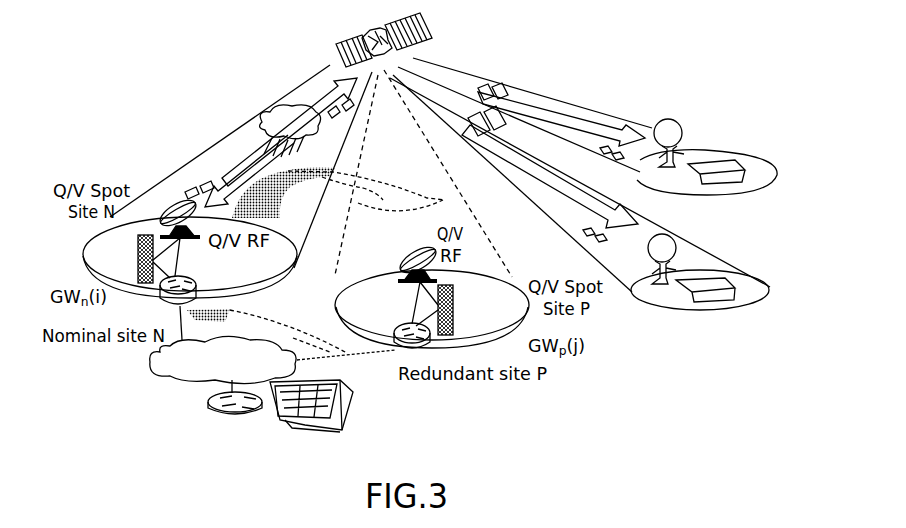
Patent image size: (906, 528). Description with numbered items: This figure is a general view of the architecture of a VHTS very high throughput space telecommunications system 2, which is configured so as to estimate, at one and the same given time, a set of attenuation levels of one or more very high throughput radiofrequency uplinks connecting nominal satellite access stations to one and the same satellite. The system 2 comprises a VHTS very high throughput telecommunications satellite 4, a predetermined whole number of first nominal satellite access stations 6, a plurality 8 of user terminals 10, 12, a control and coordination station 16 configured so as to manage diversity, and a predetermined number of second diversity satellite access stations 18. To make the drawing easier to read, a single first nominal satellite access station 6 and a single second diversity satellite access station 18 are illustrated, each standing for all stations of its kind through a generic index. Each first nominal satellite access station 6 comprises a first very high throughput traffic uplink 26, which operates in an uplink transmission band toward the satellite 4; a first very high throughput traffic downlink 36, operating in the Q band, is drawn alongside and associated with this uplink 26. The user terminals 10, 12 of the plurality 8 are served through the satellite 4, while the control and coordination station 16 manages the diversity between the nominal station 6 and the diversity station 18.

The VHTS very high throughput space telecommunications system 2 is at (212, 55).
The VHTS very high throughput telecommunications satellite 4 is at (336, 47).
The first nominal satellite access station 6 is at (137, 268).
The plurality of user terminals 8 is at (660, 95).
The user terminal 10 is at (682, 170).
The user terminal 12 is at (656, 282).
The control and coordination station 16 is at (352, 398).
The second diversity satellite access station 18 is at (455, 310).
The first very high throughput traffic uplink 26 is at (240, 160).
The downlink beam LDn(i) 36 is at (190, 185).